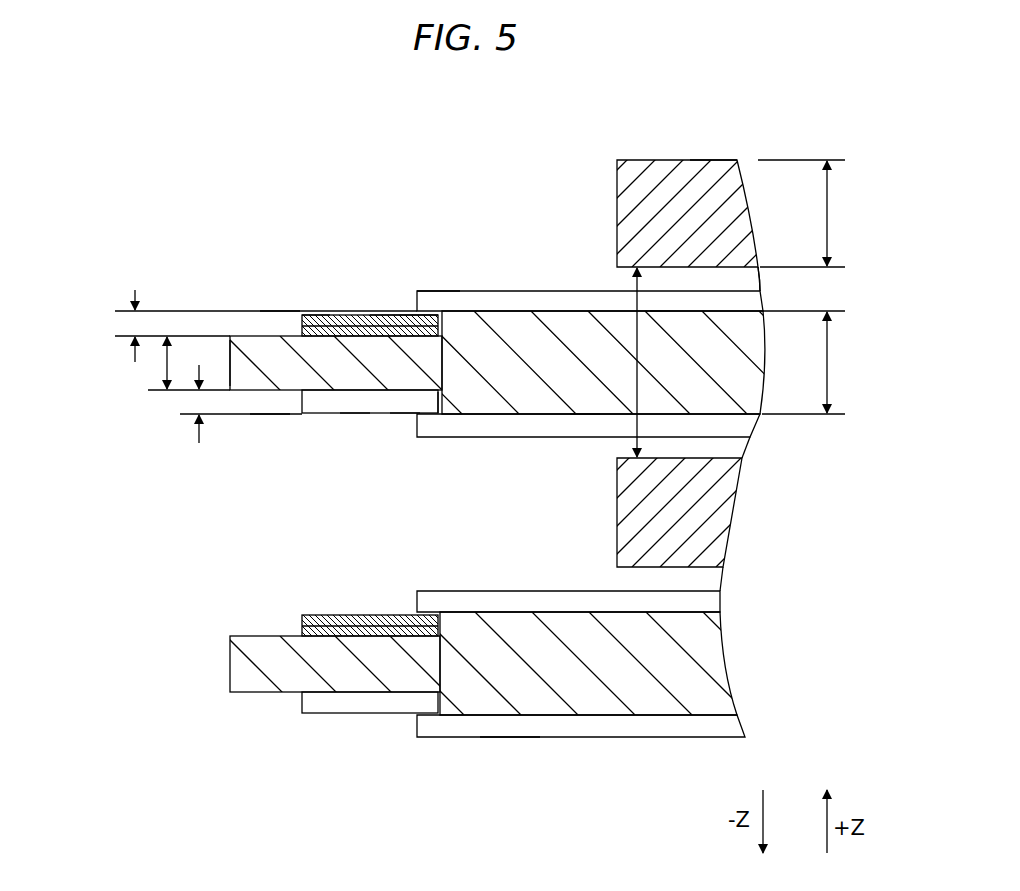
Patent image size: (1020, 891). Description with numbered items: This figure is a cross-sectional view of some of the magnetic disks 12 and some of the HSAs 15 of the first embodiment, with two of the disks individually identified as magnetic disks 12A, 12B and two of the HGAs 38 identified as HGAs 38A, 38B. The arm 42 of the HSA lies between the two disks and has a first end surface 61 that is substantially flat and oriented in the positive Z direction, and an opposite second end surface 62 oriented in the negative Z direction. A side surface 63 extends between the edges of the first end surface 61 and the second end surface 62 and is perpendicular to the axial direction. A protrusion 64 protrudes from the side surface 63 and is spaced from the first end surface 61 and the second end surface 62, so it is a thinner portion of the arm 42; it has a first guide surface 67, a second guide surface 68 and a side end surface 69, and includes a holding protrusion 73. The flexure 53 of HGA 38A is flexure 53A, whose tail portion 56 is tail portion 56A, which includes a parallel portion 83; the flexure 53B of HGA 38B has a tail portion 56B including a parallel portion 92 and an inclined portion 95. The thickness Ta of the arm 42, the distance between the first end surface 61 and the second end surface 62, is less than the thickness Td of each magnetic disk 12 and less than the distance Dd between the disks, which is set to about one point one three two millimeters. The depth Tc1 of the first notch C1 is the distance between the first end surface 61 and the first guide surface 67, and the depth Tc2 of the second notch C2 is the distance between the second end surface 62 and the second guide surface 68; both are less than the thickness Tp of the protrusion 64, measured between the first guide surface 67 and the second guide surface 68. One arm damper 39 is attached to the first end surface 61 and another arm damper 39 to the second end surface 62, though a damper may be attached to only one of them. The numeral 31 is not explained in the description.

The magnetic disk 12 is at (678, 362).
The magnetic disk 12A is at (630, 197).
The magnetic disk 12B is at (720, 507).
The HSA 15 is at (497, 288).
The magnet surface 31 is at (703, 161).
The HGA 38 is at (255, 361).
The HGA 38A is at (255, 361).
The HGA 38B is at (321, 613).
The arm damper 39 is at (530, 309).
The arm 42 is at (530, 395).
The flexure 53 is at (255, 361).
The flexure 53A is at (255, 361).
The flexure 53B is at (321, 613).
The tail portion 56 is at (255, 361).
The tail portion 56A is at (313, 612).
The tail portion 56B is at (330, 788).
The first end surface 61 is at (660, 311).
The second end surface 62 is at (580, 400).
The side surface 63 is at (441, 405).
The protrusion 64 is at (309, 467).
The first guide surface 67 is at (402, 315).
The second guide surface 68 is at (400, 399).
The side end surface 69 is at (230, 358).
The holding protrusion 73 is at (255, 350).
The parallel portion 83 is at (385, 315).
The parallel portion 92 is at (330, 317).
The inclined portion 95 is at (352, 401).
The first notch C1 is at (277, 315).
The second notch C2 is at (265, 414).
The thickness Td is at (832, 216).
The thickness Ta is at (832, 366).
The distance Dd is at (637, 300).
The depth Tc1 is at (135, 323).
The thickness Tp is at (165, 372).
The depth Tc2 is at (198, 403).